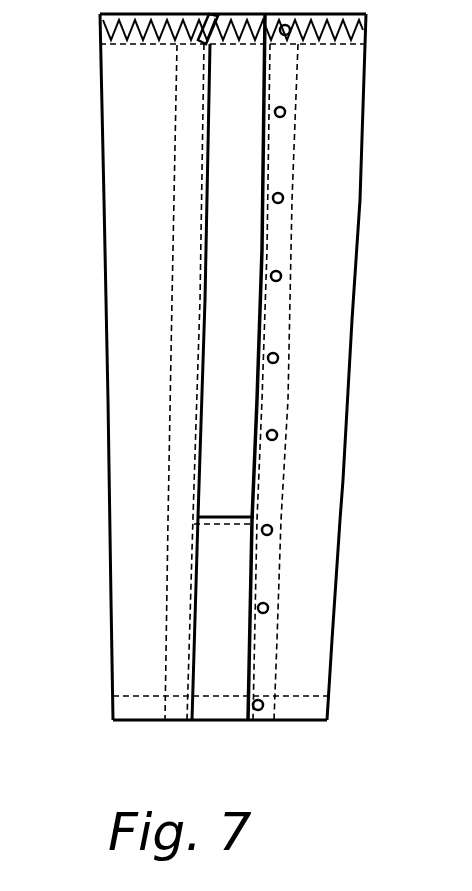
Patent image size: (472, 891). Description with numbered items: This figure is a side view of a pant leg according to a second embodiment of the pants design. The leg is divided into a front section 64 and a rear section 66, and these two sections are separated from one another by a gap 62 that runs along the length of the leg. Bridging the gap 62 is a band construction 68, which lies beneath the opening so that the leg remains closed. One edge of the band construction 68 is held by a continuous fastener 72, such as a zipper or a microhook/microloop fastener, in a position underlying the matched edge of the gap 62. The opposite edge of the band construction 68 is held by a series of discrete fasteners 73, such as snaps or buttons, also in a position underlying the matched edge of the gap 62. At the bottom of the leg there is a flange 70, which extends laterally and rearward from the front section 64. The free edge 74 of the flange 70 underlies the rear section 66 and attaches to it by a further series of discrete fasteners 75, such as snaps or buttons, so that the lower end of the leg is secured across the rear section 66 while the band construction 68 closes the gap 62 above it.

The gap 62 is at (262, 285).
The front section 64 is at (130, 520).
The rear section 66 is at (310, 533).
The band construction 68 is at (222, 406).
The flange 70 is at (210, 634).
The continuous fastener 72 is at (178, 578).
The discrete fasteners 73 is at (284, 198).
The free edge 74 is at (279, 638).
The discrete fasteners 75 is at (266, 724).